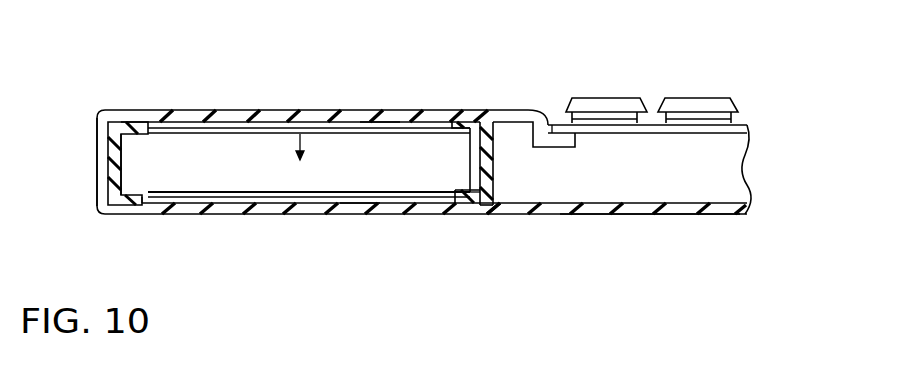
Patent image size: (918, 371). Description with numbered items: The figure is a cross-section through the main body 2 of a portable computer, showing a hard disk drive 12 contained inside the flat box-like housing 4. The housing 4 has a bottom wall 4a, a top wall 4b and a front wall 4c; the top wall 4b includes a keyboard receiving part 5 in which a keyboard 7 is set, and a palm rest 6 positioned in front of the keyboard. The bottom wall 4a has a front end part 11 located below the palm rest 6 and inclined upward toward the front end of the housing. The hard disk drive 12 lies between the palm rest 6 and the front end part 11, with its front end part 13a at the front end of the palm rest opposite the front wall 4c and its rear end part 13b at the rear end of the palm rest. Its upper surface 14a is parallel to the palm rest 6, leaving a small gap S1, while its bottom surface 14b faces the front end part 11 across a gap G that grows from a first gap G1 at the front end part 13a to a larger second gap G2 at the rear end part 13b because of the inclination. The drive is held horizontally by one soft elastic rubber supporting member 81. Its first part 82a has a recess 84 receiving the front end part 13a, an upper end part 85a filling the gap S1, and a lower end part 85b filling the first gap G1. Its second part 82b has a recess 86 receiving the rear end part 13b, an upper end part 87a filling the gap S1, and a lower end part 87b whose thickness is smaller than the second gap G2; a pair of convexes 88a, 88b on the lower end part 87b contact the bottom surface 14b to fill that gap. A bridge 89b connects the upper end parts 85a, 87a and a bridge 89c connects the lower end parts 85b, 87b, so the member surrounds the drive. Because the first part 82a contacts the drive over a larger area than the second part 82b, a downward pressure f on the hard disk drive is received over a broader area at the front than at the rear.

The main body 2 is at (530, 68).
The housing 4 is at (699, 193).
The bottom wall 4a is at (614, 215).
The top wall 4b is at (402, 108).
The front wall 4c is at (100, 138).
The keyboard receiving part 5 is at (556, 122).
The palm rest 6 is at (240, 118).
The keyboard 7 is at (693, 97).
The front end part 11 is at (225, 214).
The hard disk drive 12 is at (342, 157).
The front end part 13a is at (134, 158).
The rear end part 13b is at (468, 152).
The upper surface 14a is at (212, 122).
The bottom surface 14b is at (270, 200).
The supporting member 81 is at (496, 188).
The first part 82a is at (108, 173).
The second part 82b is at (494, 165).
The recess 84 is at (116, 188).
The upper end part 85a is at (131, 123).
The lower end part 85b is at (128, 205).
The recess 86 is at (494, 128).
The upper end part 87a is at (486, 116).
The lower end part 87b is at (460, 204).
The convex 88a is at (488, 207).
The convex 88b is at (527, 229).
The second bridge 89b is at (291, 122).
The third bridge 89c is at (312, 195).
The gap G is at (360, 198).
The first gap G1 is at (156, 200).
The second gap G2 is at (452, 194).
The gap S1 is at (376, 121).
The downward pressure f is at (306, 154).